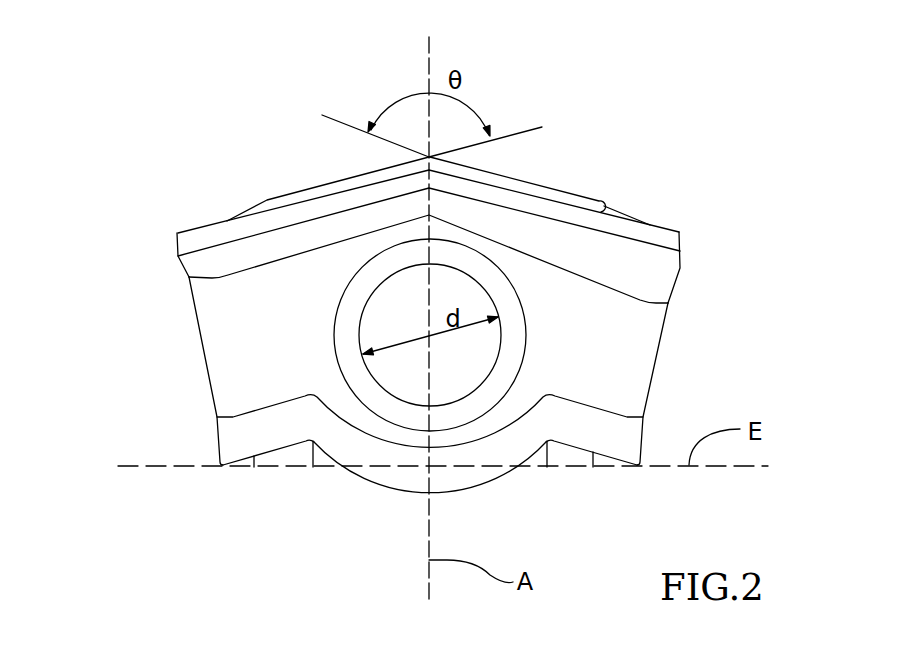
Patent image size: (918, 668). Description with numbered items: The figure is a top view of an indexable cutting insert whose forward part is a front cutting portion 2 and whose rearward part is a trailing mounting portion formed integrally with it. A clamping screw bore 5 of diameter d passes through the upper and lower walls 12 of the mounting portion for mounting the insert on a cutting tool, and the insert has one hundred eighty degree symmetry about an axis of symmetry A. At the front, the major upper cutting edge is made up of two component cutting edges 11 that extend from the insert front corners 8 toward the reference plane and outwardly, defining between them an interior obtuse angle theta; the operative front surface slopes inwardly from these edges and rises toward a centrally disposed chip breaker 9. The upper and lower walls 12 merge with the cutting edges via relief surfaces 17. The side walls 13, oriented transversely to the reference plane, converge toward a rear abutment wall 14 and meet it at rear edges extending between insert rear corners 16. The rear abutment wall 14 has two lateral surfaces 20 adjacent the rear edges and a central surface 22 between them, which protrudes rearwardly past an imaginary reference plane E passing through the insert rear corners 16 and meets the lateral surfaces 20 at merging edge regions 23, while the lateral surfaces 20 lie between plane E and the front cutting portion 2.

The front cutting portion 2 is at (583, 130).
The clamping screw bore 5 is at (388, 321).
The insert front corners 8 is at (177, 232).
The chip breaker 9 is at (586, 204).
The component cutting edges 11 is at (210, 227).
The upper and lower walls 12 is at (270, 311).
The side walls 13 is at (192, 321).
The rear abutment wall 14 is at (388, 487).
The insert rear corners 16 is at (219, 467).
The relief surfaces 17 is at (296, 215).
The lateral surfaces 20 is at (254, 467).
The central surface 22 is at (462, 493).
The merging edge regions 23 is at (313, 467).